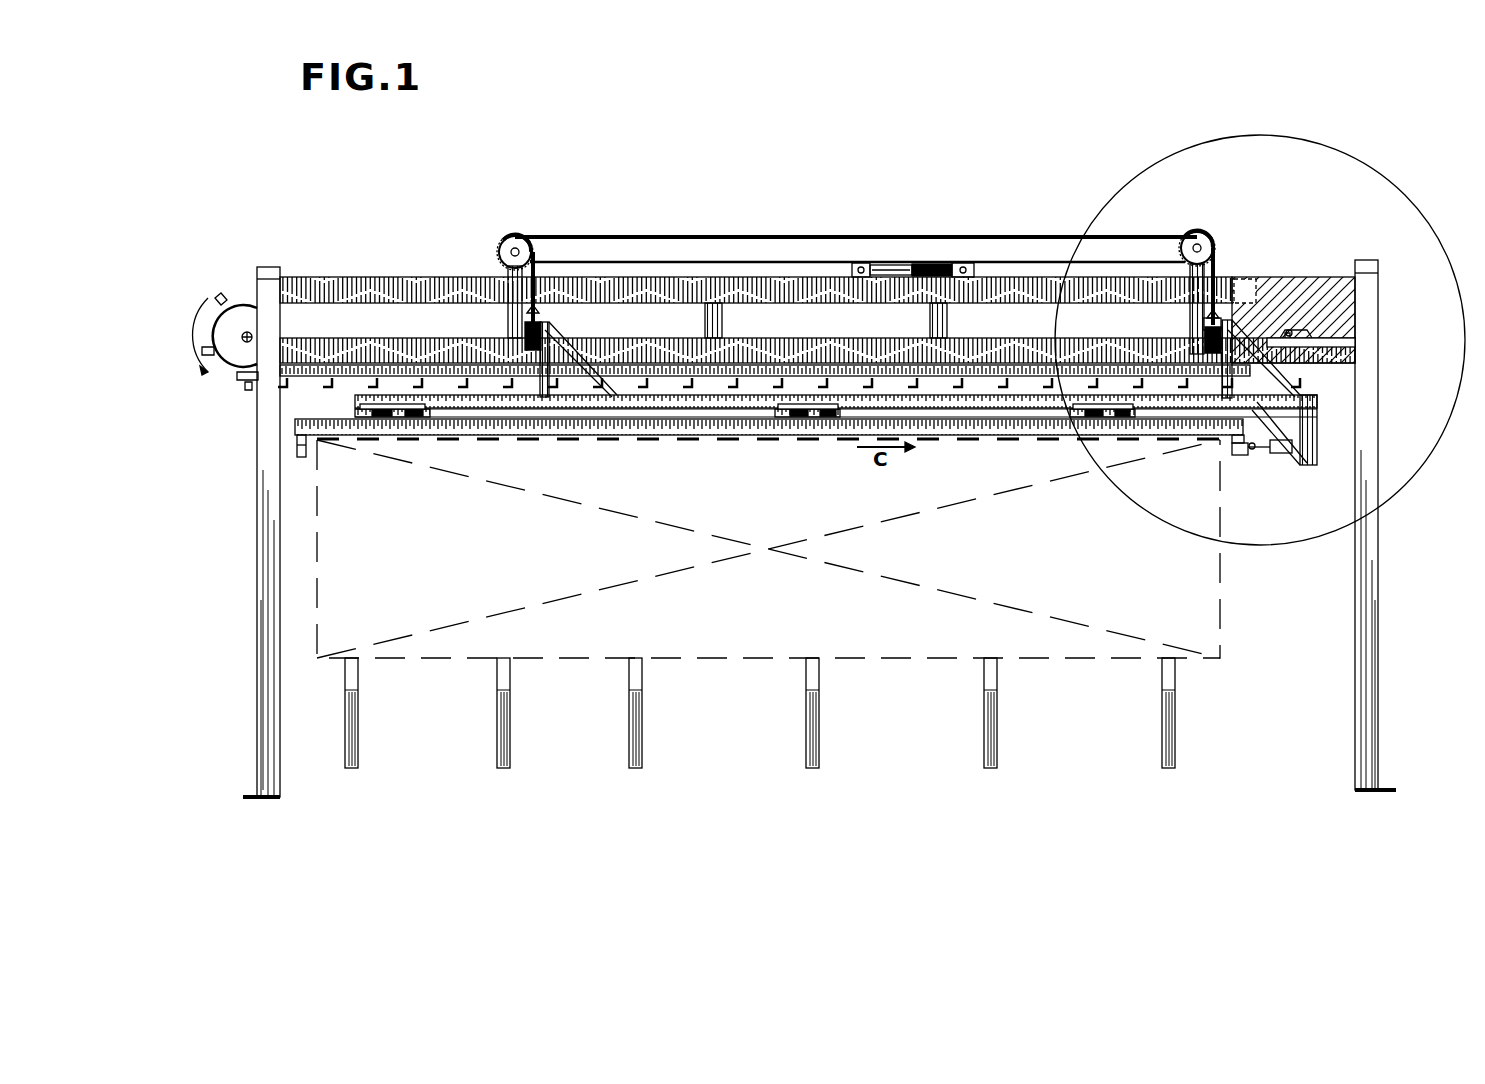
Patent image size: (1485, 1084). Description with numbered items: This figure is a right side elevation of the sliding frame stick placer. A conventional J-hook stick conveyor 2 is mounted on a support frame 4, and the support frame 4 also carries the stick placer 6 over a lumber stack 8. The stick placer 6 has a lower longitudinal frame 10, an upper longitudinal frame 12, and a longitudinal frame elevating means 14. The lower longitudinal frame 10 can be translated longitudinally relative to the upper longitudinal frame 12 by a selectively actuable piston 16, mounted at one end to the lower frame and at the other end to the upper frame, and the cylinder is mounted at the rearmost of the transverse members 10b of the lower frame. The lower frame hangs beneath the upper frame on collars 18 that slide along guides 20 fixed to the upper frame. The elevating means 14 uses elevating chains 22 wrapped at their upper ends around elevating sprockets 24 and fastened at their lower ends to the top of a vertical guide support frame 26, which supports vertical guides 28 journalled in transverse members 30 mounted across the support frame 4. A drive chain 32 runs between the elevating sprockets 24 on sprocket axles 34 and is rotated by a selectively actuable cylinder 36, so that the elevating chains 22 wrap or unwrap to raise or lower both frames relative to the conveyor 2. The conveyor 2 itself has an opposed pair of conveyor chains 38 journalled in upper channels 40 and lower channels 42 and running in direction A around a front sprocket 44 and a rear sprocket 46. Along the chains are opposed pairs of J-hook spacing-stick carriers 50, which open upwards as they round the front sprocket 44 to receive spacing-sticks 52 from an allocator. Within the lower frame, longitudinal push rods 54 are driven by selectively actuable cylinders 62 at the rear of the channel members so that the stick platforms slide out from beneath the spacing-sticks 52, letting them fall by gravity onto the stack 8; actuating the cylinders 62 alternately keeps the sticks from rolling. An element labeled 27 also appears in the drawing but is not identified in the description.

The J-hook stick conveyor 2 is at (212, 360).
The support frame 4 is at (268, 265).
The stick placer 6 is at (816, 263).
The lumber stack 8 is at (1087, 572).
The lower longitudinal frame 10 is at (298, 428).
The transverse members 10b is at (1236, 452).
The upper longitudinal frame 12 is at (356, 401).
The longitudinal frame elevating means 14 is at (513, 240).
The selectively actuable piston 16 is at (1279, 452).
The collars 18 is at (388, 438).
The guides 20 is at (385, 418).
The elevating chains 22 is at (538, 268).
The elevating sprockets 24 is at (519, 238).
The vertical guide support frame 26 is at (565, 340).
The control box 27 is at (1257, 290).
The vertical guides 28 is at (524, 361).
The transverse members 30 is at (1204, 331).
The drive chain 32 is at (963, 239).
The sprocket axles 34 is at (511, 250).
The selectively actuable cylinder 36 is at (923, 262).
The conveyor chains 38 is at (230, 377).
The upper channels 40 is at (336, 279).
The lower channels 42 is at (344, 353).
The front sprocket 44 is at (242, 314).
The rear sprocket 46 is at (1296, 312).
The J-hook spacing-stick carriers 50 is at (220, 296).
The spacing-sticks 52 is at (246, 386).
The longitudinal push rods 54 is at (1165, 425).
The selectively actuable cylinders 62 is at (1258, 404).